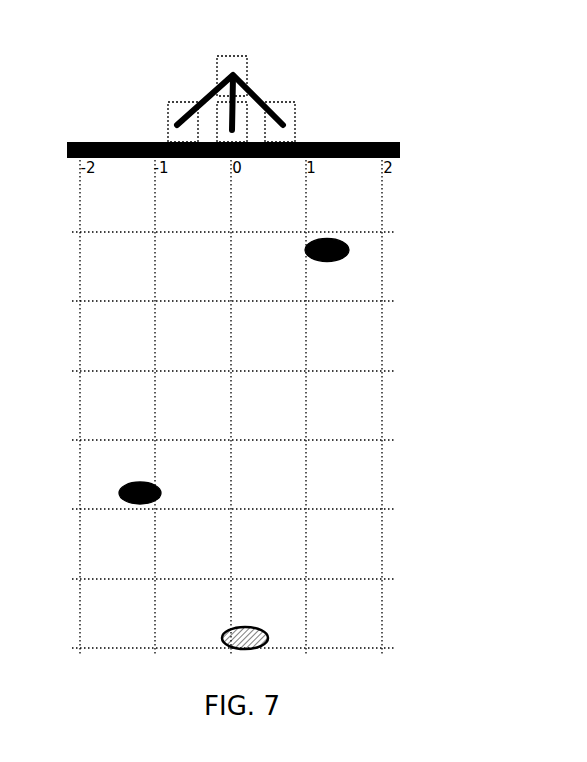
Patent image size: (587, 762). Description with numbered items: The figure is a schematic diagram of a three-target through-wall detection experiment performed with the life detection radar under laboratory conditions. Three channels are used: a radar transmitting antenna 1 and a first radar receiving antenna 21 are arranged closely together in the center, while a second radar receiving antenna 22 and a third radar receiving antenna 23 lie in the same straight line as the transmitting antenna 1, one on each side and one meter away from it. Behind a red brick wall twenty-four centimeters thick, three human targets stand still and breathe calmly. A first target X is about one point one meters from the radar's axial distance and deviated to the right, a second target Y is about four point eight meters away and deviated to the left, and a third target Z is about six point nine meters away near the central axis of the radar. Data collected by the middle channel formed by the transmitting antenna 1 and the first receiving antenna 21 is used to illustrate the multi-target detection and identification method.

The radar transmitting antenna 1 is at (242, 65).
The first radar receiving antenna 21 is at (242, 118).
The second radar receiving antenna 22 is at (290, 112).
The third radar receiving antenna 23 is at (182, 112).
The first target X is at (347, 242).
The second target Y is at (122, 498).
The third target Z is at (268, 630).